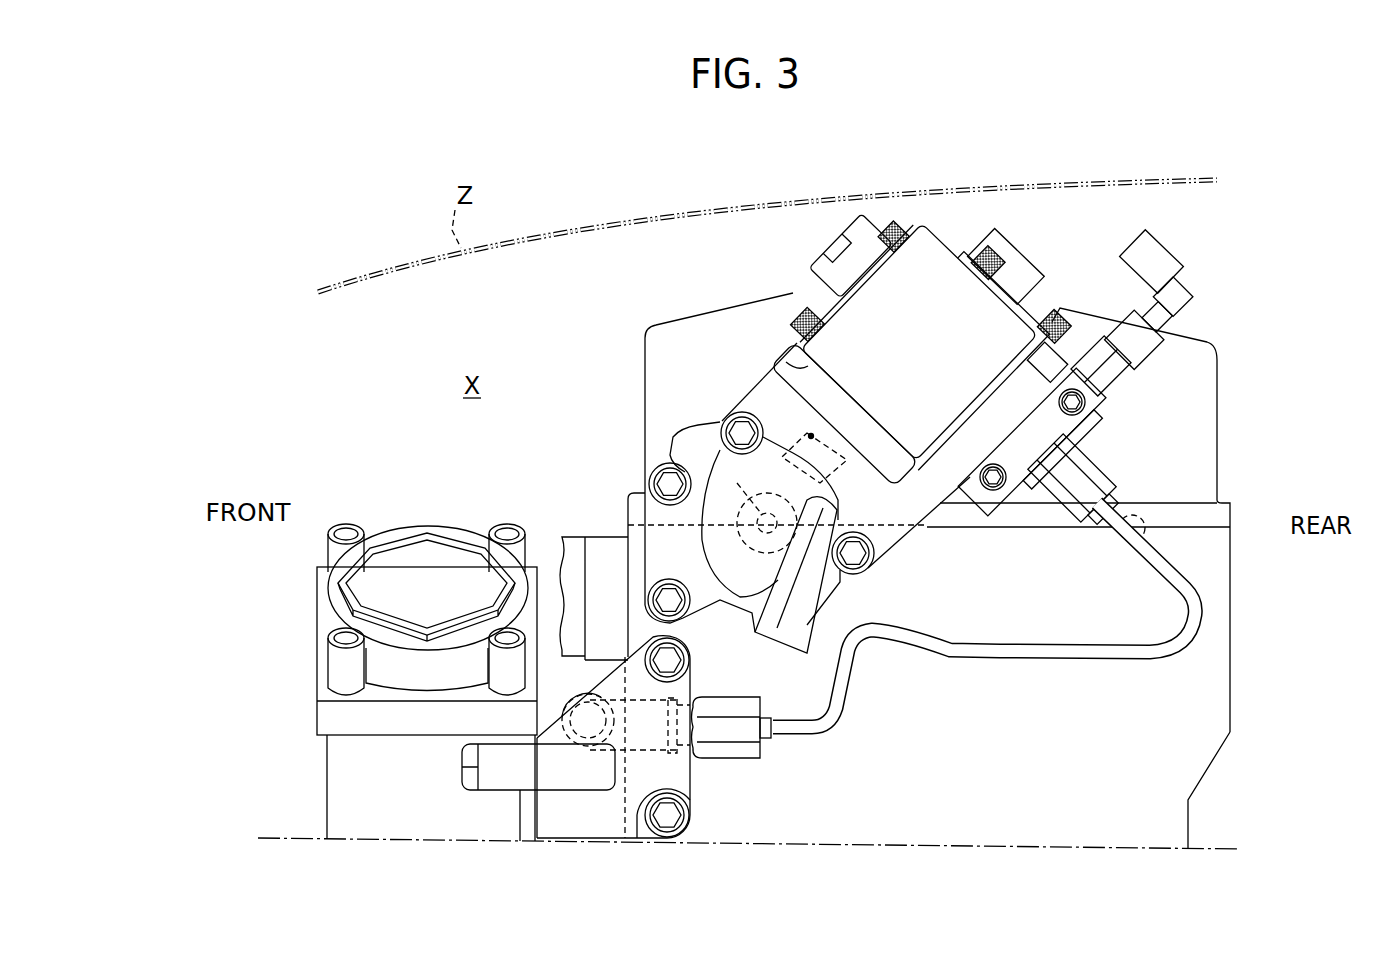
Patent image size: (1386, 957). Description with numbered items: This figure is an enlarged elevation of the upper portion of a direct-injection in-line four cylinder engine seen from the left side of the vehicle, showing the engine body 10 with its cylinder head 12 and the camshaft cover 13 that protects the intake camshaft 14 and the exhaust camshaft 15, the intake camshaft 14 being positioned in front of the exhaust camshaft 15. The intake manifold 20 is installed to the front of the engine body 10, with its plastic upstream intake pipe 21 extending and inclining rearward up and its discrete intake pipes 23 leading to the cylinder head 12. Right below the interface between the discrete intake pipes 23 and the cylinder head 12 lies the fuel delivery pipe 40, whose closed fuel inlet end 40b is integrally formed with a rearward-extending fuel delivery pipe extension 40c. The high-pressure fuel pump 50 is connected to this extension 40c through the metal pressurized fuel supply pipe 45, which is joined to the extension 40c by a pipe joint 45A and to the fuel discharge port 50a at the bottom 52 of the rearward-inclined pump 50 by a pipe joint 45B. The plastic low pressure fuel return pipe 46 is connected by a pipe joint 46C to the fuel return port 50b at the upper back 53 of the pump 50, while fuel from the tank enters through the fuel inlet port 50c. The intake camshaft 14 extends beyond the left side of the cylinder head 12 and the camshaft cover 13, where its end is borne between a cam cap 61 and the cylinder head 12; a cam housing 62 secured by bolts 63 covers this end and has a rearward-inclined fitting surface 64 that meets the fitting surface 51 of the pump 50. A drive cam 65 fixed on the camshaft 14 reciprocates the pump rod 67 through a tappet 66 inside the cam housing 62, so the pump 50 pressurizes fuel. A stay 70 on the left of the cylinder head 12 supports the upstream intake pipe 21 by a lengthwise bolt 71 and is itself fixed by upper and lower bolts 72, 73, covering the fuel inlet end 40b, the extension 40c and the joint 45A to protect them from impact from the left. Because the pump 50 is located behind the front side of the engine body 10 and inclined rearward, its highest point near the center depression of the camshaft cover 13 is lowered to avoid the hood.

The engine body 10 is at (645, 350).
The cylinder head 12 is at (1238, 690).
The camshaft cover 13 is at (1210, 443).
The intake camshaft 14 is at (770, 517).
The exhaust camshaft 15 is at (1143, 537).
The intake manifold 20 is at (448, 512).
The upstream intake pipe 21 is at (332, 757).
The discrete intake pipes 23 is at (562, 537).
The fuel delivery pipe 40 is at (570, 695).
The fuel inlet end 40b is at (586, 753).
The fuel delivery pipe extension 40c is at (697, 697).
The pressurized fuel supply pipe 45 is at (1083, 660).
The pipe joint 45A is at (742, 760).
The pipe joint 45B is at (1110, 477).
The low pressure fuel return pipe 46 is at (1160, 248).
The pipe joint 46C is at (1108, 320).
The high-pressure fuel pump 50 is at (1033, 273).
The fuel discharge port 50a is at (1067, 437).
The fuel return port 50b is at (1117, 373).
The fuel inlet port 50c is at (1053, 393).
The fitting surface 51 is at (800, 347).
The bottom 52 is at (1017, 490).
The upper back 53 is at (943, 242).
The cam cap 61 is at (697, 442).
The cam housing 62 is at (796, 596).
The bolts 63 is at (727, 422).
The fitting surface 64 is at (790, 360).
The drive cam 65 is at (756, 537).
The tappet 66 is at (797, 433).
The rod 67 is at (848, 424).
The stay 70 is at (552, 828).
The bolt 71 is at (462, 787).
The upper bolt 72 is at (686, 640).
The lower bolt 73 is at (672, 835).